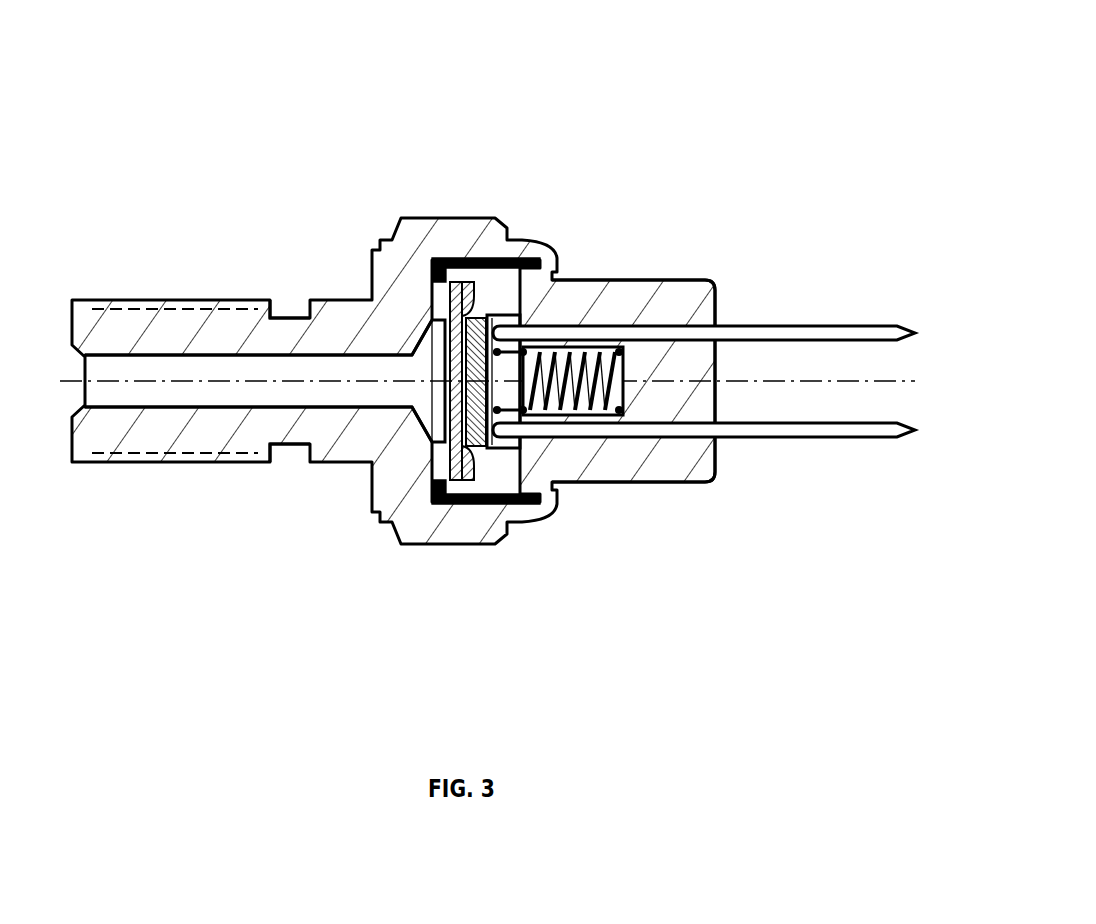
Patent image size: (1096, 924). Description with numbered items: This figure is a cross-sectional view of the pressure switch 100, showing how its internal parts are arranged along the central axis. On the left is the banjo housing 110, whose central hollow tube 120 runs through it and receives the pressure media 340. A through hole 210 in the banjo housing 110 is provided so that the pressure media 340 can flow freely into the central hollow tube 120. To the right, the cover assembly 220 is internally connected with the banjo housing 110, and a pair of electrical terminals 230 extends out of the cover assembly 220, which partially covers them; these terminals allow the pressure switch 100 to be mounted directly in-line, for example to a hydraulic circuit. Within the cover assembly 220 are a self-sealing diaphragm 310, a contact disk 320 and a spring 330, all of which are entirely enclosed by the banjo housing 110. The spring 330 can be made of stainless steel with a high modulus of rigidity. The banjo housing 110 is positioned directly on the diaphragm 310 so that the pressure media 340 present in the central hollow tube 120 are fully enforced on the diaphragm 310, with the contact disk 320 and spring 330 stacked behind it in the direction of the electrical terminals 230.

The pressure switch 100 is at (660, 68).
The banjo housing 110 is at (176, 300).
The central hollow tube 120 is at (110, 396).
The through hole 210 is at (293, 300).
The cover assembly 220 is at (663, 281).
The electrical terminals 230 is at (815, 326).
The self-sealing diaphragm 310 is at (436, 300).
The contact disk 320 is at (486, 330).
The spring 330 is at (593, 348).
The pressure media 340 is at (119, 370).